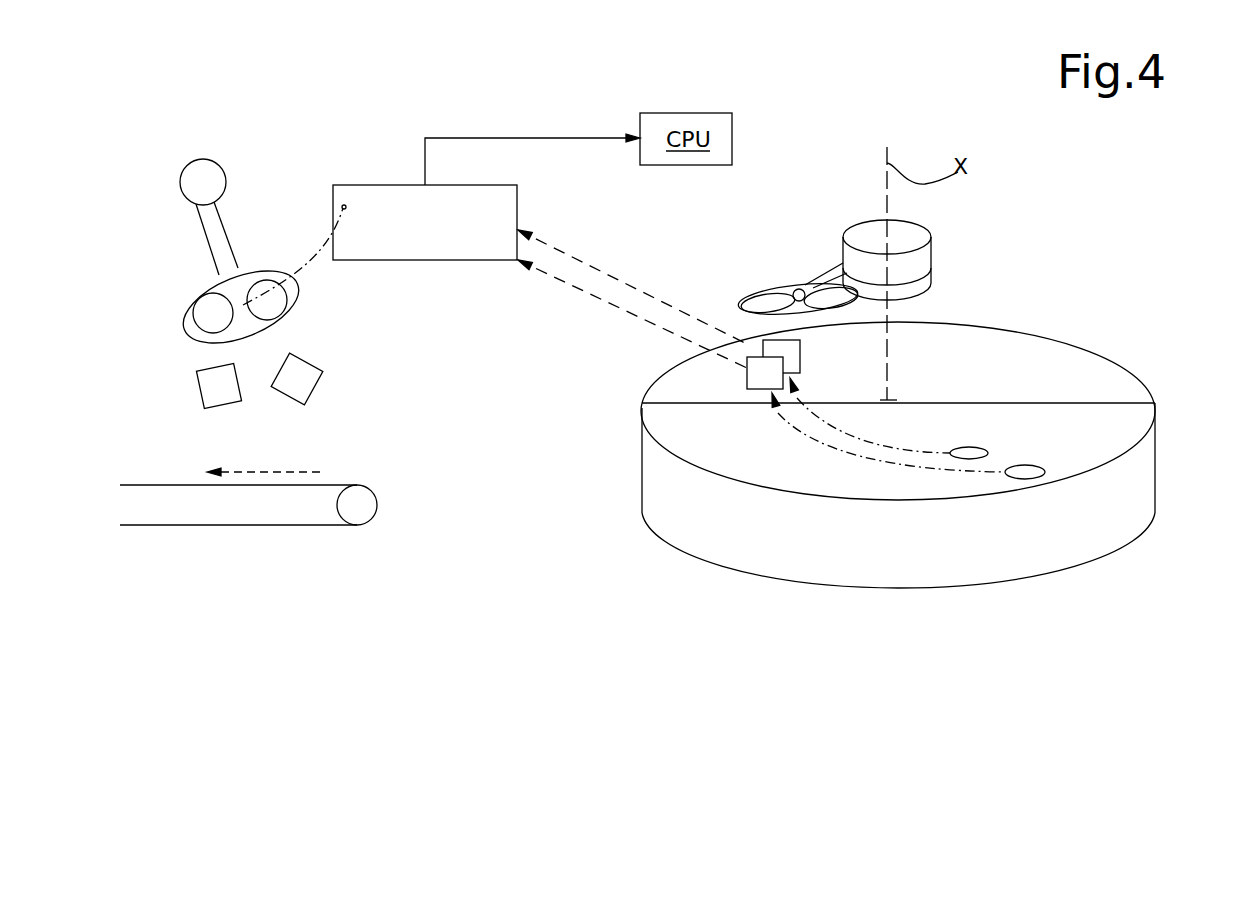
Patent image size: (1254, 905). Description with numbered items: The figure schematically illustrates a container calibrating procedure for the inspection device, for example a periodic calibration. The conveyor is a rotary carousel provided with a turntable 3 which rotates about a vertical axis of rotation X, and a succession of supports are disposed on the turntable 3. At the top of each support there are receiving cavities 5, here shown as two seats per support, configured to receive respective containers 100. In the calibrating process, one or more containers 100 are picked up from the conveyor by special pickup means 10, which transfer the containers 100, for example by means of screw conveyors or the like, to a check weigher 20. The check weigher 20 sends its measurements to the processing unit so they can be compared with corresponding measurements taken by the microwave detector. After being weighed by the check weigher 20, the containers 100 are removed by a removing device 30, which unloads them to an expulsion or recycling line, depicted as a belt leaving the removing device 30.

The turntable 3 is at (1132, 488).
The receiving cavities 5 is at (969, 459).
The pickup means 10 is at (768, 282).
The check weigher 20 is at (439, 231).
The removing device 30 is at (185, 238).
The containers 100 is at (778, 352).